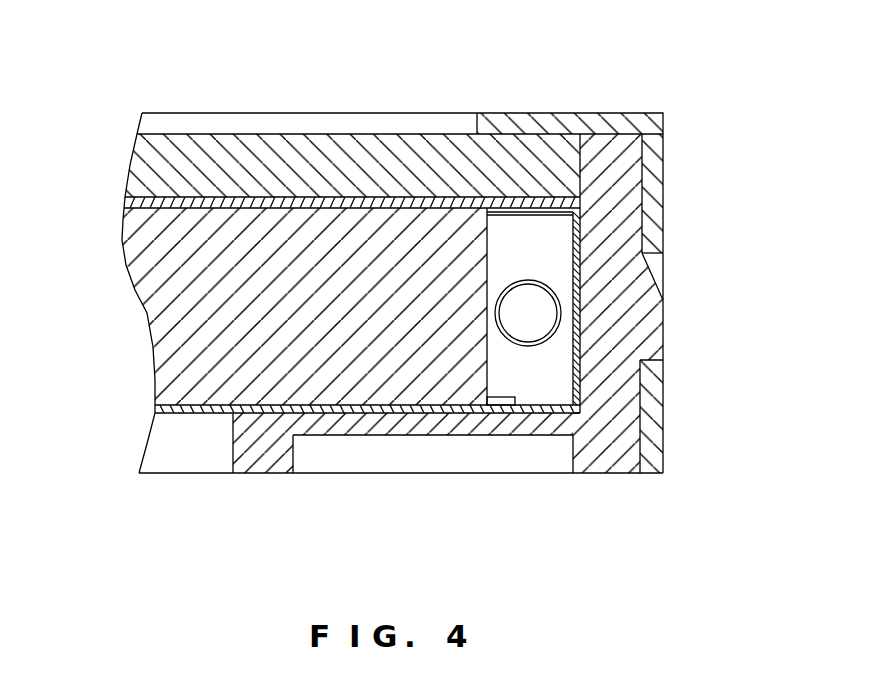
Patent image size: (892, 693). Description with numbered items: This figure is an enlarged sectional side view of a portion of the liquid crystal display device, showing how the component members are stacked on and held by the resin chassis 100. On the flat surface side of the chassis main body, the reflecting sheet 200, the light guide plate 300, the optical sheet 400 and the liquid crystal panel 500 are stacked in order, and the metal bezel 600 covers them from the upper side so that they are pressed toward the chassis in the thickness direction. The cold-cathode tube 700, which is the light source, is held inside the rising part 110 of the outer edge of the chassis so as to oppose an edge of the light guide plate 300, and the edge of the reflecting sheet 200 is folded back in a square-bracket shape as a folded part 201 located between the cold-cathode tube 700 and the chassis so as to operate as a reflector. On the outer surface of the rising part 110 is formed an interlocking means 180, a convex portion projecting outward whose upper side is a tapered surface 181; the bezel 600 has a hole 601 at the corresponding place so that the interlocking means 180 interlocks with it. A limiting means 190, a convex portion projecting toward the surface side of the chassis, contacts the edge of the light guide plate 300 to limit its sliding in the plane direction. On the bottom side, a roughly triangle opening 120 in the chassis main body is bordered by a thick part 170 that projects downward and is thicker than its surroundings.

The resin chassis 100 is at (138, 447).
The rising part 110 is at (618, 148).
The roughly triangle opening 120 is at (186, 460).
The thick part 170 is at (256, 462).
The interlocking means 180 is at (655, 333).
The tapered surface 181 is at (662, 277).
The limiting means 190 is at (502, 405).
The reflecting sheet 200 is at (155, 406).
The folded part 201 is at (515, 207).
The light guide plate 300 is at (153, 303).
The optical sheet 400 is at (127, 203).
The liquid crystal panel 500 is at (140, 175).
The bezel 600 is at (536, 103).
The hole 601 is at (658, 259).
The cold-cathode tube 700 is at (540, 346).